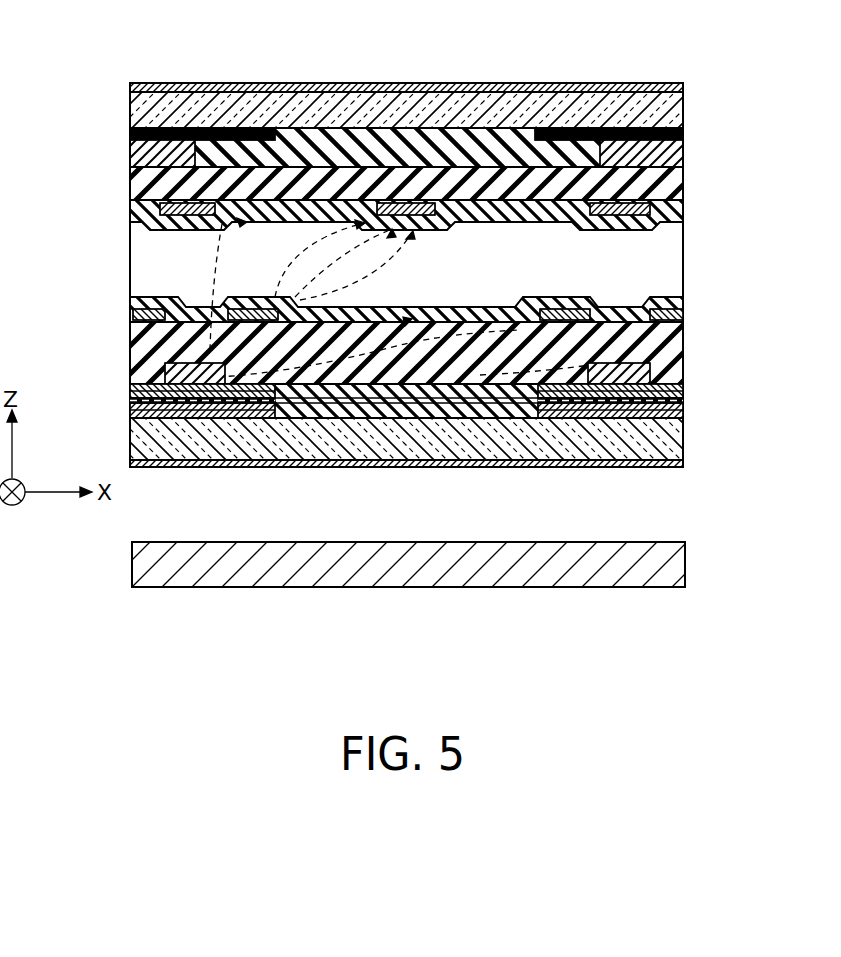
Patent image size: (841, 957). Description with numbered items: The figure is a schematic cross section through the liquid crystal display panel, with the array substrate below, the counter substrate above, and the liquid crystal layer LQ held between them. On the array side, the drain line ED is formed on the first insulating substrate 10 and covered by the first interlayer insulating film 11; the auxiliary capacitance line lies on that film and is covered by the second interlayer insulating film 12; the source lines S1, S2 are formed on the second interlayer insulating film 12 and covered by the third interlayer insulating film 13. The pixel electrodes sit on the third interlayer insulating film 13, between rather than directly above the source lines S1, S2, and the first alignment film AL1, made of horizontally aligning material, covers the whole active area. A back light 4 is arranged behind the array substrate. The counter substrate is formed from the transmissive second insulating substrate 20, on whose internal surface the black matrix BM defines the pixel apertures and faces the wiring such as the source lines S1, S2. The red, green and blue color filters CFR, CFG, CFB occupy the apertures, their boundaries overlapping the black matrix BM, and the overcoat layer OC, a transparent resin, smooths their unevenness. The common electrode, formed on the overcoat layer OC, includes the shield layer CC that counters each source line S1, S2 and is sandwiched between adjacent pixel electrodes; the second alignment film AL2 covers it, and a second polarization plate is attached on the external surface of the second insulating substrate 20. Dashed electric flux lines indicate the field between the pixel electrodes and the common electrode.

The second insulating substrate 20 is at (676, 110).
The first insulating substrate 10 is at (678, 437).
The back light 4 is at (686, 562).
The first interlayer insulating film 11 is at (358, 420).
The second interlayer insulating film 12 is at (428, 420).
The third interlayer insulating film 13 is at (478, 420).
The black matrix BM is at (183, 128).
The red color filter CFR is at (132, 151).
The green color filter CFG is at (333, 128).
The blue color filter CFB is at (680, 150).
The overcoat layer OC is at (678, 184).
The shield layer CC is at (138, 222).
The liquid crystal layer LQ is at (675, 229).
The first alignment film AL1 is at (495, 308).
The second alignment film AL2 is at (443, 228).
The source line S1 is at (165, 373).
The source line S2 is at (650, 376).
The drain line ED is at (196, 420).